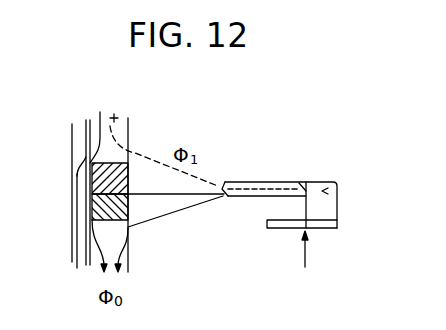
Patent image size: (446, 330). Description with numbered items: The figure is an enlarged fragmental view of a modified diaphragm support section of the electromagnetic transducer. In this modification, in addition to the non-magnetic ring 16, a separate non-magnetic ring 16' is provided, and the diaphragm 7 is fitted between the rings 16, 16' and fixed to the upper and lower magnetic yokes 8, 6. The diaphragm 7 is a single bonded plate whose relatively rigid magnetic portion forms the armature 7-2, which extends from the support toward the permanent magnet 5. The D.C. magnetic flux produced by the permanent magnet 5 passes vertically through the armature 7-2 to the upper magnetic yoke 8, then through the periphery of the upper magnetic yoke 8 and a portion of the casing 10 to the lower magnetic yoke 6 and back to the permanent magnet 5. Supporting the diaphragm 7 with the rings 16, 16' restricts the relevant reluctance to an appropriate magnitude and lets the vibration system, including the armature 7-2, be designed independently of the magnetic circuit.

The permanent magnet 5 is at (288, 228).
The lower magnetic yoke 6 is at (128, 257).
The diaphragm 7 is at (206, 196).
The armature 7-2 is at (305, 182).
The upper magnetic yoke 8 is at (128, 127).
The casing 10 is at (77, 252).
The non-magnetic ring 16 is at (98, 178).
The separate non-magnetic ring 16' is at (92, 209).